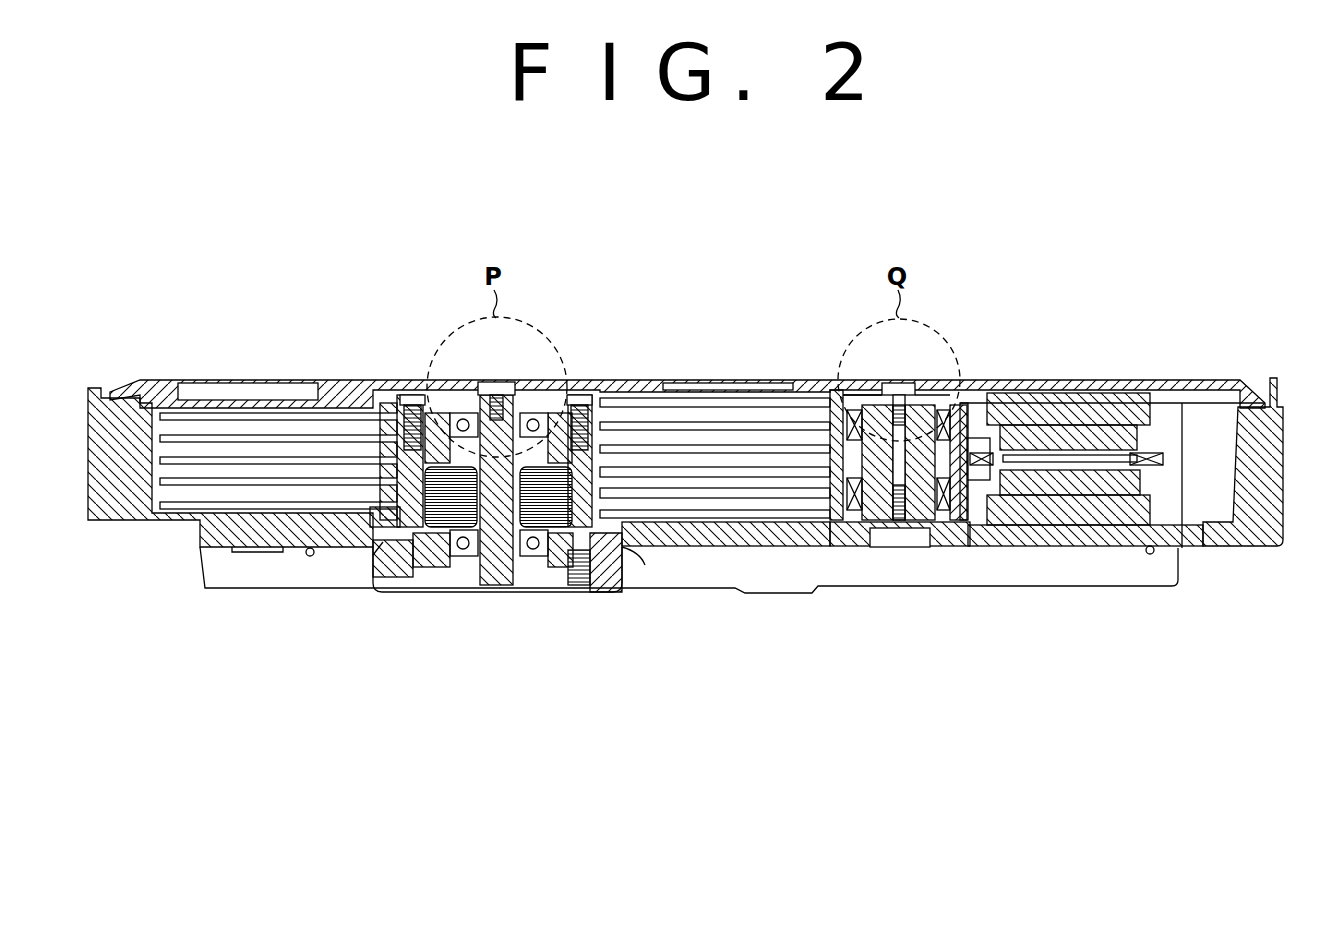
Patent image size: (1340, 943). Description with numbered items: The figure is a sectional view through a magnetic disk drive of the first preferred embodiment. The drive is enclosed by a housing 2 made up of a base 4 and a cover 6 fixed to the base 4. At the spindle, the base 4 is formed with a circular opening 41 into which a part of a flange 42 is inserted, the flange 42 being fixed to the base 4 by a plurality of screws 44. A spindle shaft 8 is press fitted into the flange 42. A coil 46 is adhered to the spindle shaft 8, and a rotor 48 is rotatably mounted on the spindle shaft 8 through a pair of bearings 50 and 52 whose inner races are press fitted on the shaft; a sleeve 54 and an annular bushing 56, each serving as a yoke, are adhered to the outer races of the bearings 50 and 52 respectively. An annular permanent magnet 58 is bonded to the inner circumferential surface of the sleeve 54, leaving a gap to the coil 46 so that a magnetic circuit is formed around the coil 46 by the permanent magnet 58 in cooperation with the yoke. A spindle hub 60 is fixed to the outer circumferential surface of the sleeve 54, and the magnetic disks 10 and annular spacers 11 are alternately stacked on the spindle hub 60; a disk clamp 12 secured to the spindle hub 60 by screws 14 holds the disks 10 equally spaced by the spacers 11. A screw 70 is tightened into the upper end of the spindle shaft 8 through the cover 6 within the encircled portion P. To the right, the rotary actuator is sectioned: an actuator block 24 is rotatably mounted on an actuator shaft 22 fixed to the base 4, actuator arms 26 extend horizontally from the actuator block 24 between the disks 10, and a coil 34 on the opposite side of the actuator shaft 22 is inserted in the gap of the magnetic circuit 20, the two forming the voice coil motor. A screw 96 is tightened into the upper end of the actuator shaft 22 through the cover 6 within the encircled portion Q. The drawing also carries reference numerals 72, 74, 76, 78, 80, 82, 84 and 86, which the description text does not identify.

The housing 2 is at (1212, 387).
The base 4 is at (1272, 500).
The cover 6 is at (1163, 380).
The spindle shaft 8 is at (510, 586).
The magnetic disks 10 is at (232, 455).
The annular spacers 11 is at (385, 440).
The disk clamp 12 is at (380, 400).
The screws 14 is at (413, 398).
The magnetic circuit 20 is at (993, 397).
The actuator shaft 22 is at (930, 522).
The actuator block 24 is at (838, 547).
The actuator arms 26 is at (747, 430).
The coil 34 is at (1165, 458).
The circular opening 41 is at (448, 568).
The flange 42 is at (470, 530).
The screws 44 is at (600, 595).
The coil 46 is at (450, 557).
The rotor 48 is at (383, 541).
The bearing 50 is at (533, 412).
The bearing 52 is at (540, 530).
The sleeve 54 is at (456, 412).
The annular bushing 56 is at (405, 578).
The annular permanent magnet 58 is at (575, 586).
The spindle hub 60 is at (634, 568).
The screw 70 is at (497, 383).
The pivot screw 72 is at (900, 548).
The pivot bracket 74 is at (965, 522).
The arm holder 76 is at (853, 405).
The pivot bearing 78 is at (855, 522).
The upper magnet 80 is at (1100, 395).
The upper yoke 82 is at (1150, 437).
The lower yoke 84 is at (1030, 522).
The lower magnet 86 is at (1110, 522).
The screw 96 is at (898, 383).